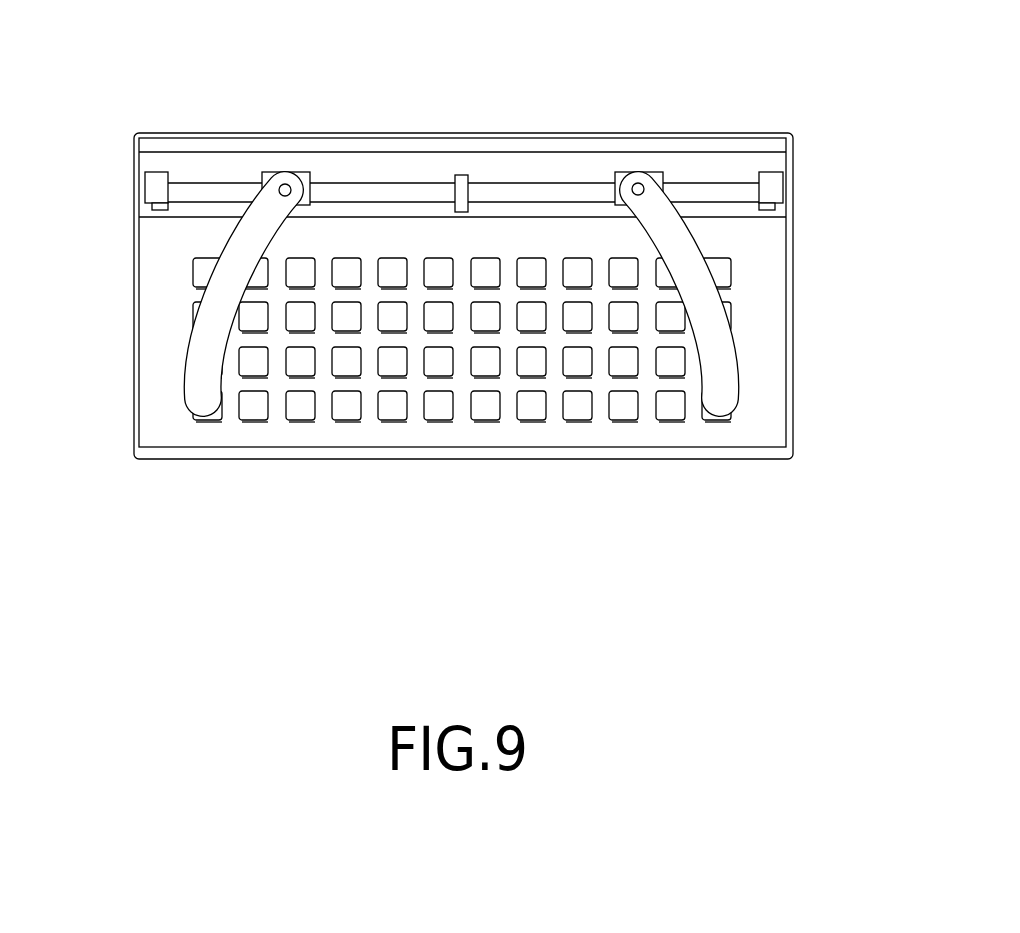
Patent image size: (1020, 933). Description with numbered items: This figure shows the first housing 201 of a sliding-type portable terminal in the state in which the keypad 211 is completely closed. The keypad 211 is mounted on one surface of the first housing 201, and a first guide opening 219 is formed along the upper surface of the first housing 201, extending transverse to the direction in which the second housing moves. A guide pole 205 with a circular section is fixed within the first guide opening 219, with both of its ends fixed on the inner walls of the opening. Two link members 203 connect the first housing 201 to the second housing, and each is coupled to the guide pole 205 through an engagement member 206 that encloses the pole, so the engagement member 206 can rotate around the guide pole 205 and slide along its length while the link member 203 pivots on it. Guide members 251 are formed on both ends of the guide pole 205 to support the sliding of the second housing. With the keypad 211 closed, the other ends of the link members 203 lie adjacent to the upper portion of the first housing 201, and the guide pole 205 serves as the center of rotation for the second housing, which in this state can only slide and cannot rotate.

The first housing 201 is at (805, 125).
The link member 203 is at (205, 362).
The guide pole 205 is at (362, 196).
The engagement member 206 is at (598, 178).
The keypad 211 is at (438, 402).
The first guide opening 219 is at (714, 165).
The guide member 251 is at (150, 181).